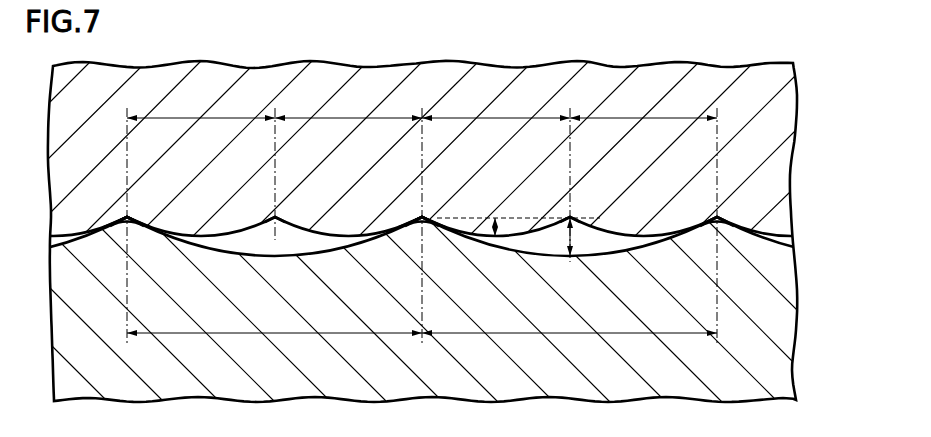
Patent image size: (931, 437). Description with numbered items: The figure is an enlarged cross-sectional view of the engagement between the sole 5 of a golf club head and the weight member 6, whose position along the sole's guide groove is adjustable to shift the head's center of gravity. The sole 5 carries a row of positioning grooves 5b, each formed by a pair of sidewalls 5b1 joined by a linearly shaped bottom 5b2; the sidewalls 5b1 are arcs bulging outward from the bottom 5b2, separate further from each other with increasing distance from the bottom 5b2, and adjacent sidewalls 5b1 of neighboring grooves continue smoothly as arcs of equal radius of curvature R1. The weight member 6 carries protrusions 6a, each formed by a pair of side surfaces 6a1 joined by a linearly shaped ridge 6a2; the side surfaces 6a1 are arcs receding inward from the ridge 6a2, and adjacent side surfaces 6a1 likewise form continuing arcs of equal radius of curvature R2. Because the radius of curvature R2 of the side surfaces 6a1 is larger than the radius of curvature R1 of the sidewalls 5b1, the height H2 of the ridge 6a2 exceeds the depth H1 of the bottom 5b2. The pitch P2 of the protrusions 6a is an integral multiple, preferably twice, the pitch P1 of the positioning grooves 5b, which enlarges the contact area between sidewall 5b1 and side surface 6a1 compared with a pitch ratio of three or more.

The sole 5 is at (767, 136).
The weight member 6 is at (775, 321).
The positioning grooves 5b is at (130, 214).
The sidewalls 5b1 is at (257, 226).
The bottom 5b2 is at (445, 209).
The protrusions 6a is at (127, 220).
The side surfaces 6a1 is at (127, 218).
The ridge 6a2 is at (128, 220).
The radius of curvature of sidewall R1 is at (391, 226).
The radius of curvature of side surface R2 is at (369, 237).
The depth of bottom H1 is at (497, 226).
The height of ridge H2 is at (573, 257).
The pitch of positioning grooves P1 is at (422, 110).
The pitch of protrusions P2 is at (422, 325).